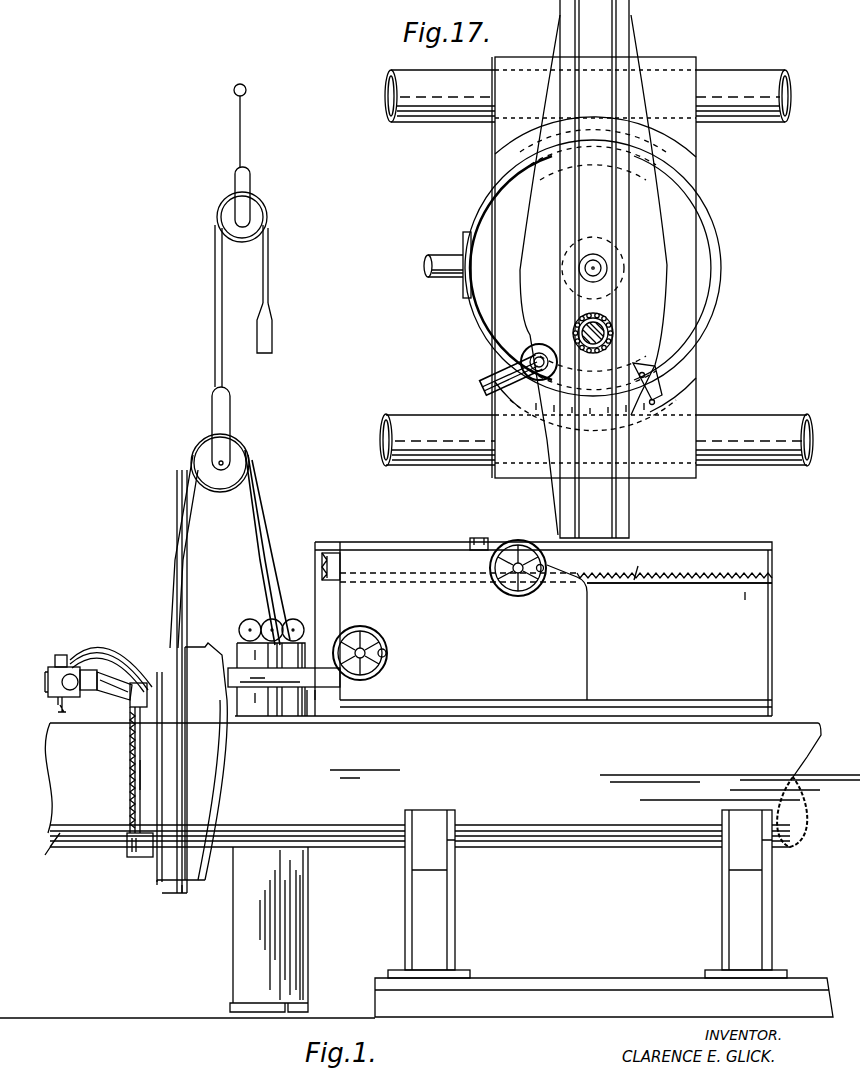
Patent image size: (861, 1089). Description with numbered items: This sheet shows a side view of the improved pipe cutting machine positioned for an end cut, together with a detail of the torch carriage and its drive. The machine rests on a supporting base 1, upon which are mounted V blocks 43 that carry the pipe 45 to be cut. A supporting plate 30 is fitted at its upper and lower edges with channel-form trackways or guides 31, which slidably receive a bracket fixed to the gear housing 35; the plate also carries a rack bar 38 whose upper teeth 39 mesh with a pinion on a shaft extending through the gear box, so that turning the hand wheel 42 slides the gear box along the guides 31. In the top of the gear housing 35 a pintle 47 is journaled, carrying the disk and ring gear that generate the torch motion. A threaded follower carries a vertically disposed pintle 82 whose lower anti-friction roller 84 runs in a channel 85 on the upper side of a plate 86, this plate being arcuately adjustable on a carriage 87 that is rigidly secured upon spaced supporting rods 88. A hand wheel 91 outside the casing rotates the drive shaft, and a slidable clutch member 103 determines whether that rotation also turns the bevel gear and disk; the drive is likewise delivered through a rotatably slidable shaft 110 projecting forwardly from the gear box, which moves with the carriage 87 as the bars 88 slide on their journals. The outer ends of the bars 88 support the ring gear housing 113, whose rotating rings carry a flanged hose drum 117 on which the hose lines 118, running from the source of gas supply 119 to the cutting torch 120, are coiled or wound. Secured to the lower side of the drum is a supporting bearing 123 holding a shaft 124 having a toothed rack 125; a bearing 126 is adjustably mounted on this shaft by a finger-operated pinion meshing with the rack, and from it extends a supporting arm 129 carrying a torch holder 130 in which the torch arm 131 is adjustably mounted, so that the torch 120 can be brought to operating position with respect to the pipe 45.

In FIG. 1, the supporting base 1 is at (553, 1002).
In FIG. 1, the supporting plate 30 is at (637, 568).
In FIG. 1, the trackways or guides 31 is at (646, 548).
In FIG. 1, the gear housing 35 is at (568, 622).
In FIG. 1, the rack bar 38 is at (742, 598).
In FIG. 1, the teeth 39 is at (712, 572).
In FIG. 1, the hand wheel 42 is at (522, 597).
In FIG. 1, the V blocks 43 is at (448, 908).
In FIG. 1, the pipe 45 is at (645, 838).
In FIG. 1, the pintle 47 is at (480, 538).
In FIG. 17, the pintle 82 is at (615, 328).
In FIG. 17, the anti-friction roller 84 is at (612, 346).
In FIG. 17, the channel 85 is at (608, 306).
In FIG. 17, the plate 86 is at (650, 240).
In FIG. 17, the carriage 87 is at (526, 478).
In FIG. 17, the supporting rods 88 is at (737, 122).
In FIG. 1, the supporting rods 88 is at (247, 678).
In FIG. 1, the hand wheel 91 is at (385, 653).
In FIG. 1, the slidable clutch member 103 is at (332, 560).
In FIG. 17, the rotatably slidable shaft 110 is at (443, 280).
In FIG. 1, the ring gear housing 113 is at (195, 770).
In FIG. 1, the flanged hose drum 117 is at (200, 890).
In FIG. 1, the hose lines 118 is at (262, 530).
In FIG. 1, the source of gas supply 119 is at (255, 915).
In FIG. 1, the cutting torch 120 is at (62, 712).
In FIG. 1, the supporting bearing 123 is at (160, 890).
In FIG. 1, the shaft 124 is at (137, 818).
In FIG. 1, the toothed rack 125 is at (135, 775).
In FIG. 1, the bearing 126 is at (130, 712).
In FIG. 1, the supporting arm 129 is at (110, 690).
In FIG. 1, the torch holder 130 is at (72, 660).
In FIG. 1, the torch arm 131 is at (59, 655).